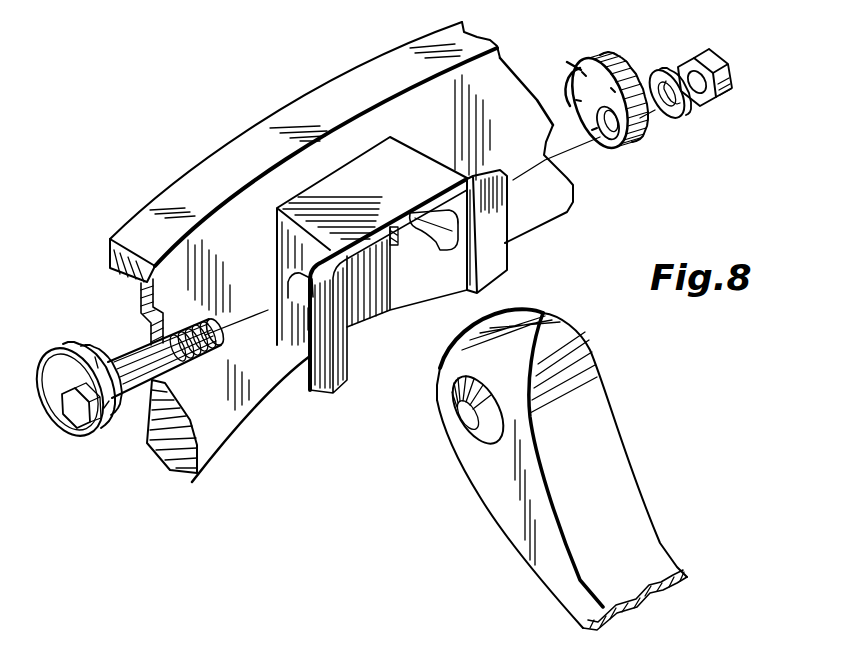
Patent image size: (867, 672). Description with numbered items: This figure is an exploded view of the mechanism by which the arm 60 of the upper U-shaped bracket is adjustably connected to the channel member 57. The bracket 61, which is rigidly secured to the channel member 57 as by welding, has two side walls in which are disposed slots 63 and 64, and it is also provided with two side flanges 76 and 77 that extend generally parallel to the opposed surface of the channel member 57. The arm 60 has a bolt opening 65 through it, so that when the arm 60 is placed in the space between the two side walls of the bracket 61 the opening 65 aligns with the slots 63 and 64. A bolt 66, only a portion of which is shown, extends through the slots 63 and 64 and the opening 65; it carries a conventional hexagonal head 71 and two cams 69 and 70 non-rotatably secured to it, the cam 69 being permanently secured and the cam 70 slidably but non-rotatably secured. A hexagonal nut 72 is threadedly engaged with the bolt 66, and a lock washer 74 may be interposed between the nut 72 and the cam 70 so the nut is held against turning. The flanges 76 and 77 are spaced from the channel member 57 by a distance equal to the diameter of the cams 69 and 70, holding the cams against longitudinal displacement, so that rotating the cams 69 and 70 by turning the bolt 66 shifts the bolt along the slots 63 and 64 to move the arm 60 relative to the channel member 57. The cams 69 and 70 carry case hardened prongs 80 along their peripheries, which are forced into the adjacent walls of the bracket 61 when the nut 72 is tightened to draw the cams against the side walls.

The channel member 57 is at (305, 107).
The arm 60 is at (605, 470).
The bracket 61 is at (384, 194).
The slot 63 is at (300, 314).
The slot 64 is at (437, 251).
The bolt opening 65 is at (458, 410).
The bolt 66 is at (135, 400).
The cam 69 is at (54, 348).
The cam 70 is at (625, 70).
The hexagonal head 71 is at (70, 421).
The hexagonal nut 72 is at (718, 56).
The lock washer 74 is at (687, 117).
The side flange 76 is at (337, 393).
The side flange 77 is at (500, 270).
The prongs 80 is at (105, 357).